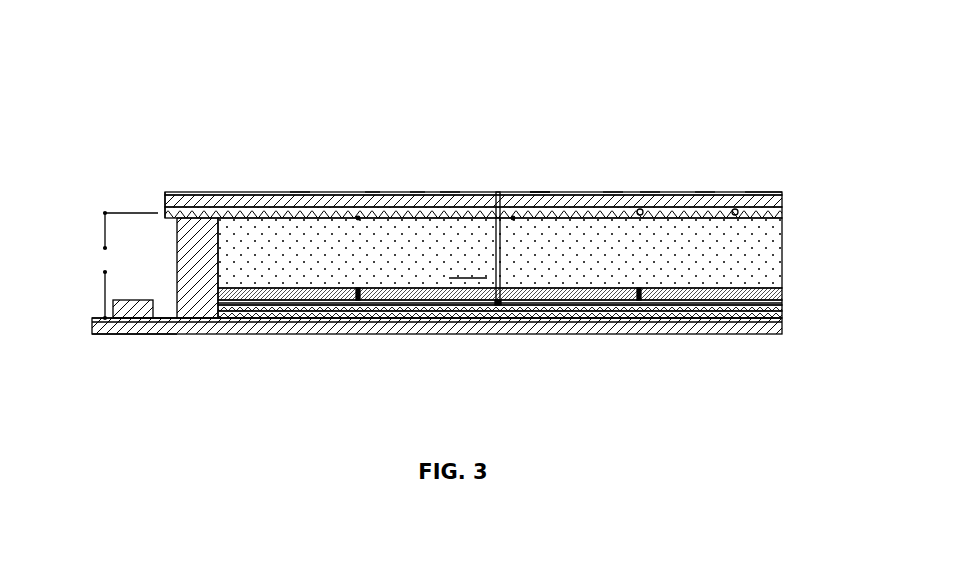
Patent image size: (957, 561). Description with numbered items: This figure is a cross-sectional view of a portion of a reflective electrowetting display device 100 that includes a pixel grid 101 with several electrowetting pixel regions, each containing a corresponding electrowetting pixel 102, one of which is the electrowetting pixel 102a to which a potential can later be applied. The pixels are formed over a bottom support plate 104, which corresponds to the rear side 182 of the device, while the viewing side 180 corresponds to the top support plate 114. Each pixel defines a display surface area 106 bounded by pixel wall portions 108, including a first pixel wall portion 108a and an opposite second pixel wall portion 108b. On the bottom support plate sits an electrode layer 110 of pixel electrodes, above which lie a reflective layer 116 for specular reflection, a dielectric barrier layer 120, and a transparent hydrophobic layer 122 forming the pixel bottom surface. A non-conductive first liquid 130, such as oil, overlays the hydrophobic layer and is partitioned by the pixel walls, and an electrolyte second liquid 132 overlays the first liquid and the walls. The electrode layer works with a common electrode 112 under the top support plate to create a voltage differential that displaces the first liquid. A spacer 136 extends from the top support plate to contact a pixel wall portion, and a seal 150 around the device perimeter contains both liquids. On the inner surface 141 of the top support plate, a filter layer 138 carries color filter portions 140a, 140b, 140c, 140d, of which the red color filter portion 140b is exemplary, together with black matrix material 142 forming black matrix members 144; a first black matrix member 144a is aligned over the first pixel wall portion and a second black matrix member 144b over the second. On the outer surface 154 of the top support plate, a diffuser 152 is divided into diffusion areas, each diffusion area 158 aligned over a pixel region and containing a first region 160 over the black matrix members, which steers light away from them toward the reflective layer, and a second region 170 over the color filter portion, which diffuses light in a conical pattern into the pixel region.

The reflective electrowetting display device 100 is at (767, 43).
The pixel grid 101 is at (538, 127).
The electrowetting pixel 102 is at (458, 353).
The electrowetting pixel 102a is at (292, 350).
The bottom support plate 104 is at (95, 335).
The display surface area 106 is at (218, 275).
The pixel wall portions 108 is at (782, 298).
The first pixel wall portion 108a is at (363, 293).
The second pixel wall portion 108b is at (507, 302).
The electrode layer 110 is at (237, 322).
The common electrode 112 is at (782, 213).
The top support plate 114 is at (163, 212).
The reflective layer 116 is at (763, 315).
The dielectric barrier layer 120 is at (782, 307).
The hydrophobic layer 122 is at (782, 302).
The first liquid 130 is at (217, 295).
The second liquid 132 is at (468, 267).
The spacer 136 is at (500, 238).
The filter layer 138 is at (162, 203).
The color filter portion 140a is at (298, 195).
The red color filter portion 140b is at (450, 192).
The color filter portion 140c is at (613, 192).
The color filter portion 140d is at (705, 192).
The inner surface 141 is at (752, 192).
The black matrix material 142 is at (245, 195).
The black matrix members 144 is at (230, 193).
The first black matrix member 144a is at (358, 220).
The second black matrix member 144b is at (513, 220).
The seal 150 is at (190, 247).
The diffuser 152 is at (540, 185).
The outer surface 154 is at (781, 191).
The diffusion area 158 is at (362, 192).
The first region 160 is at (372, 192).
The second region 170 is at (418, 192).
The viewing side 180 is at (652, 83).
The rear side 182 is at (188, 350).